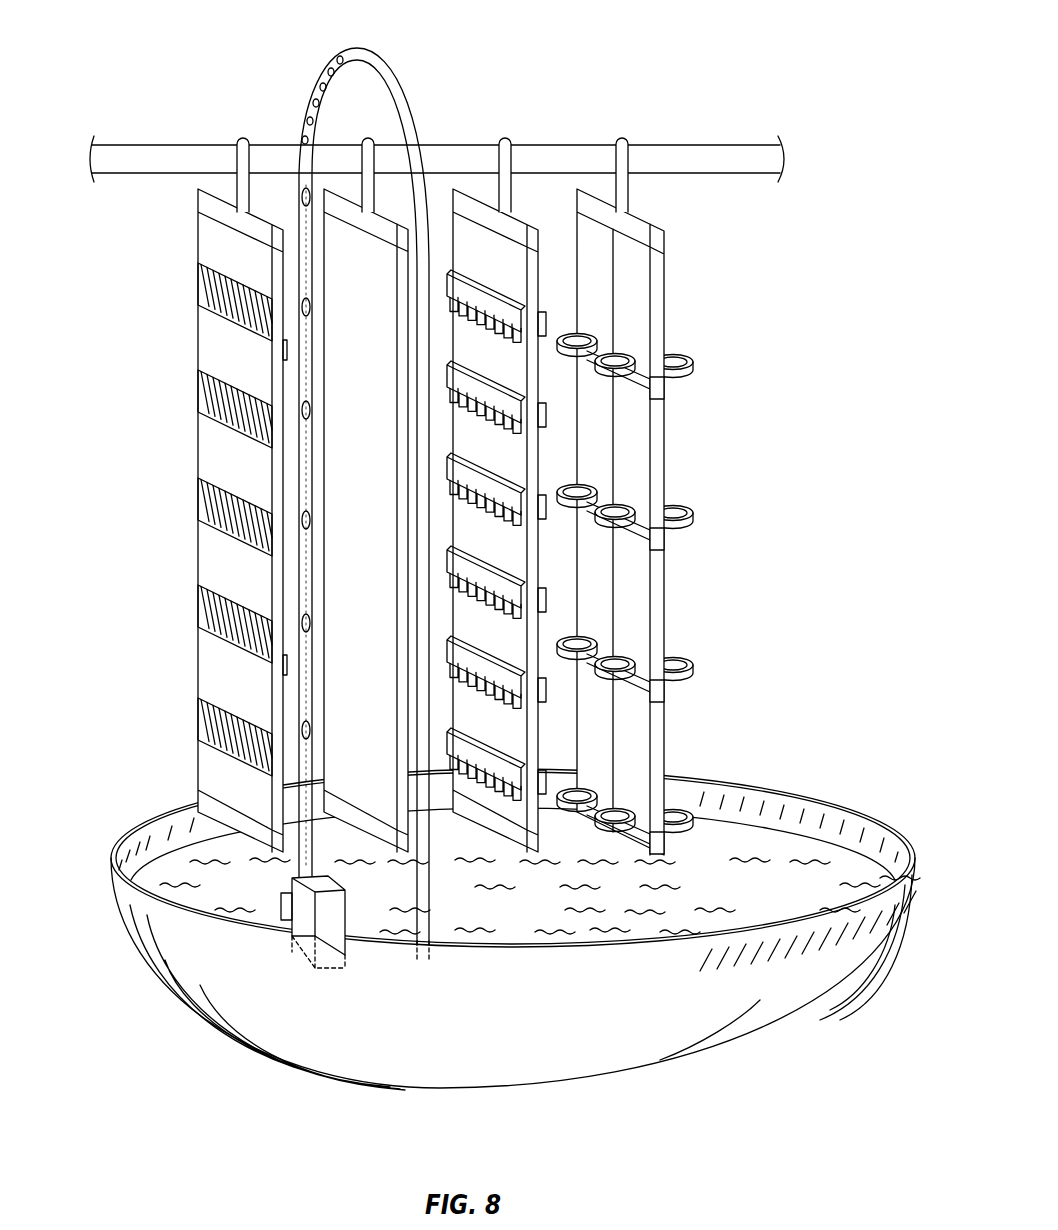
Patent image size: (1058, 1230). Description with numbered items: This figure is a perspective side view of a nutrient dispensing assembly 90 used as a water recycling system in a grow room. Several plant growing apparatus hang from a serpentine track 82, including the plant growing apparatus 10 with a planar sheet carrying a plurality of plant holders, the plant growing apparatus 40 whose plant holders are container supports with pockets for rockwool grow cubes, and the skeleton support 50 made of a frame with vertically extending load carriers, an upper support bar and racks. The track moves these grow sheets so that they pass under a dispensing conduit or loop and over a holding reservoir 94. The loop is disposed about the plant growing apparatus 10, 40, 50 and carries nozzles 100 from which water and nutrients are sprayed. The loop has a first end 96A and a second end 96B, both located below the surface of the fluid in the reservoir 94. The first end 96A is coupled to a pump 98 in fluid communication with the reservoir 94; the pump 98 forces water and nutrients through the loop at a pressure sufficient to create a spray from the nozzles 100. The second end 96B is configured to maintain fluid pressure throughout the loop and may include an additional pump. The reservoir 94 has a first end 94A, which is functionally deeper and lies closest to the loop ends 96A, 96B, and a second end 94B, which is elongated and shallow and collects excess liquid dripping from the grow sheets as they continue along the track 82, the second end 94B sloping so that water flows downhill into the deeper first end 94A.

The nutrient dispensing assembly 90 is at (757, 60).
The serpentine track 82 is at (553, 145).
The plant growing apparatus 40 is at (503, 213).
The plant growing apparatus 10 is at (197, 334).
The nozzles 100 is at (309, 516).
The skeleton support 50 is at (666, 446).
The holding reservoir 94 is at (484, 1088).
The first end of the reservoir 94A is at (153, 851).
The second end of the reservoir 94B is at (850, 835).
The pump 98 is at (283, 897).
The first end of the loop 96A is at (305, 903).
The second end of the loop 96B is at (428, 952).